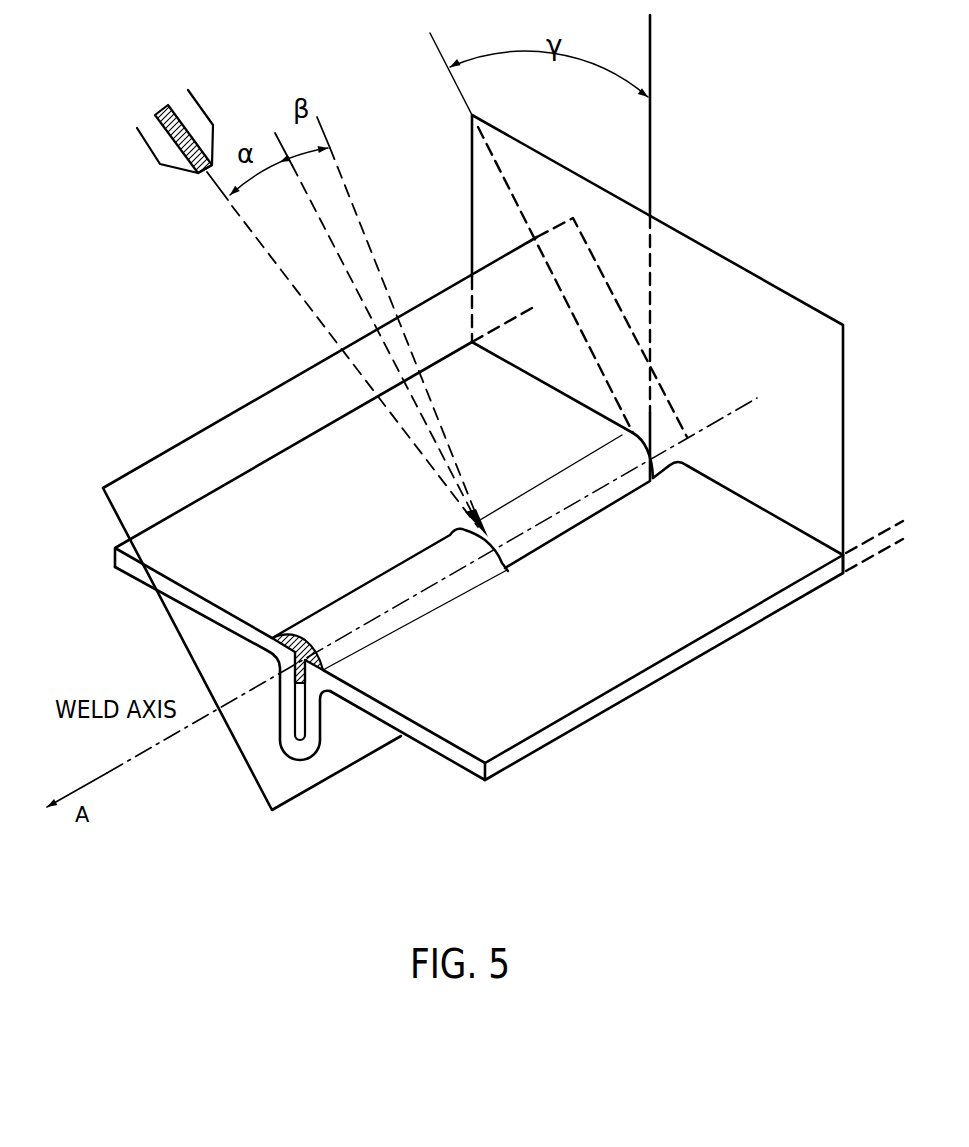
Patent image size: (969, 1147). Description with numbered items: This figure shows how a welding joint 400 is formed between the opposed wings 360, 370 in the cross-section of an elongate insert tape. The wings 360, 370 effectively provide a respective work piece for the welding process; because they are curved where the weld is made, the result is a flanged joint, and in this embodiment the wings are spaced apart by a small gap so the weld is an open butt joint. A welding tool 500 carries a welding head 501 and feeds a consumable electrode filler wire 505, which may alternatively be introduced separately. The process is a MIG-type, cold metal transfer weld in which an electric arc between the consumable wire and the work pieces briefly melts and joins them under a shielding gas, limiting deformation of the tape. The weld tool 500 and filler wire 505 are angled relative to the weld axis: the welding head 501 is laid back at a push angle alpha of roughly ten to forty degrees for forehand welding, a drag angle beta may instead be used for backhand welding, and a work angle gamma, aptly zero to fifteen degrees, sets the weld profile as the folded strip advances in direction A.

The wing 360 is at (413, 728).
The wing 370 is at (123, 565).
The welding joint 400 is at (355, 608).
The welding tool 500 is at (157, 143).
The welding head 501 is at (170, 210).
The consumable electrode filler wire 505 is at (178, 118).